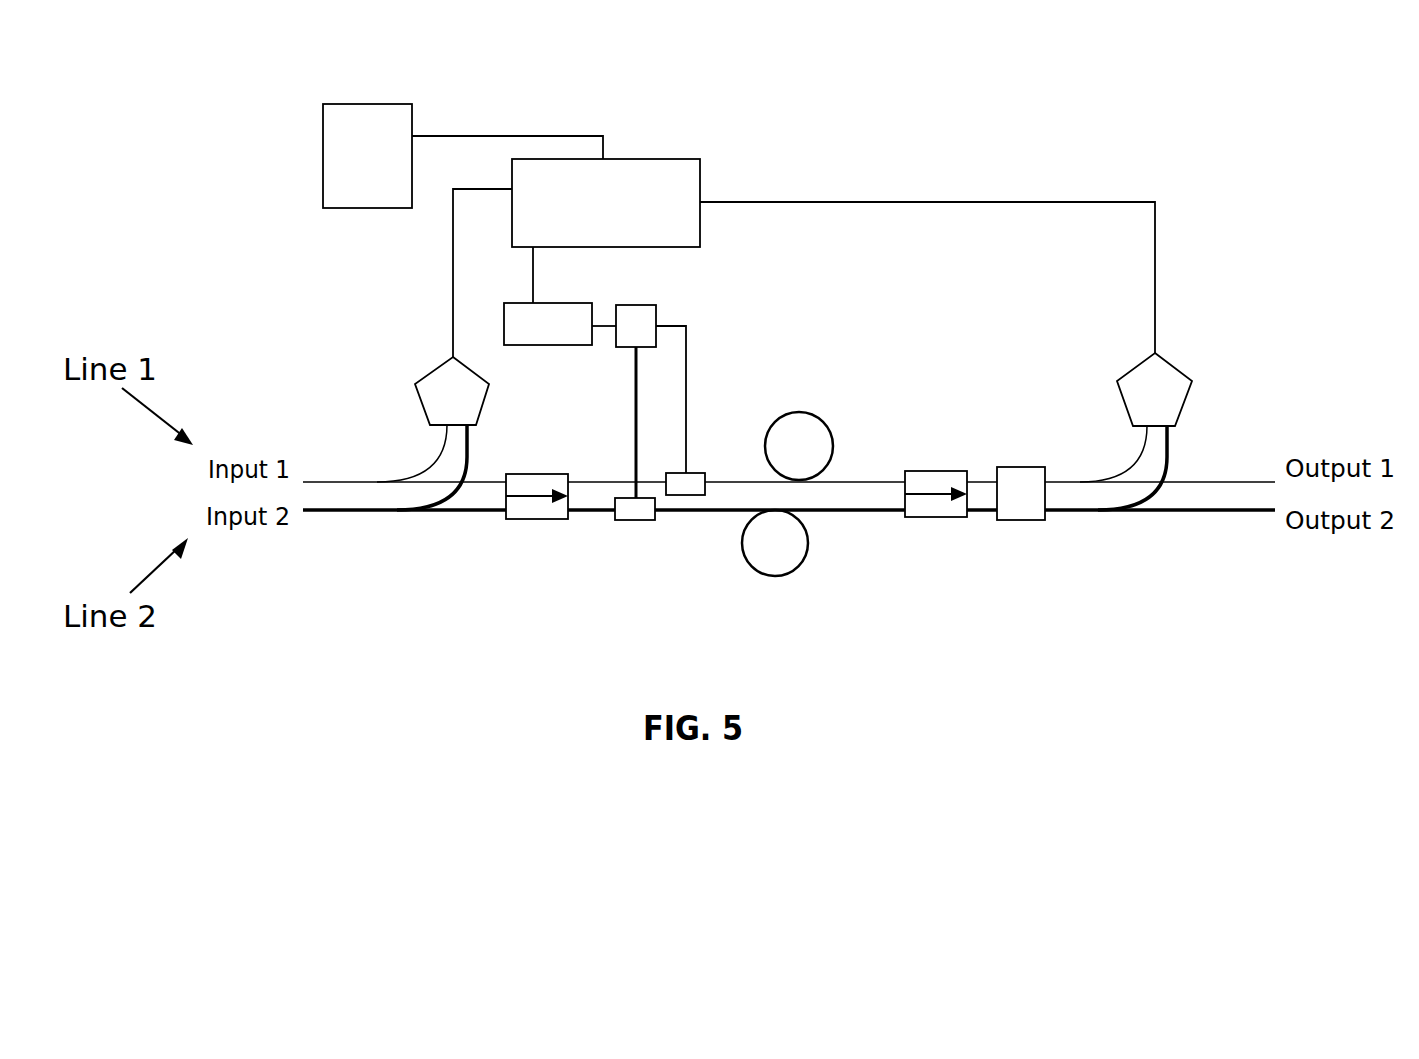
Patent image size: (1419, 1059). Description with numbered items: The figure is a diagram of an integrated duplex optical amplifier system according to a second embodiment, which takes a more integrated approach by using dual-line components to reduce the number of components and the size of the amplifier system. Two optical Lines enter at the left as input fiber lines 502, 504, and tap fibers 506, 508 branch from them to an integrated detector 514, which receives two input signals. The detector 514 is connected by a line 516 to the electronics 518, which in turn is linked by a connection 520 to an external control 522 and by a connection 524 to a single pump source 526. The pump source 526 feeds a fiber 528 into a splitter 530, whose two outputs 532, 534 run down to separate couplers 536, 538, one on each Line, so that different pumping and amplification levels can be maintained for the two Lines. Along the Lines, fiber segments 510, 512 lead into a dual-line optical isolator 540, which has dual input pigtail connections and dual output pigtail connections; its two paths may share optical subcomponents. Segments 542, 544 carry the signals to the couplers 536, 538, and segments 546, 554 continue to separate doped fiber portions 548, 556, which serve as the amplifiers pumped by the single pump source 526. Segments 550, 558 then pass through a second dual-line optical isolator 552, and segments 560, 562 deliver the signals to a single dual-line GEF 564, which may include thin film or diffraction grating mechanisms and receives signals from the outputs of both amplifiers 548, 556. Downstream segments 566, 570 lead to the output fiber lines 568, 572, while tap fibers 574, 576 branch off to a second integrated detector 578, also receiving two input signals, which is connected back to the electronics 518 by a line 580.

The input 1 fiber line 502 is at (337, 480).
The input 2 fiber line 504 is at (337, 514).
The tap fiber from line 1 to detector 506 is at (418, 463).
The tap fiber from line 2 to detector 508 is at (472, 448).
The line 1 segment before isolator 510 is at (478, 478).
The line 2 segment before isolator 512 is at (467, 515).
The integrated detector 514 is at (418, 376).
The detector to electronics connection 516 is at (452, 301).
The electronics 518 is at (653, 158).
The external control to electronics connection 520 is at (553, 133).
The external control 522 is at (314, 183).
The electronics to pump connection 524 is at (536, 286).
The pump source 526 is at (547, 348).
The pump to splitter fiber 528 is at (605, 330).
The splitter 530 is at (631, 303).
The splitter output fiber to upper coupler 532 is at (690, 335).
The splitter output fiber to lower coupler 534 is at (632, 421).
The coupler 536 is at (692, 471).
The coupler 538 is at (647, 522).
The dual-line optical isolator 540 is at (532, 525).
The line 1 segment between isolator and coupler 542 is at (618, 478).
The line 2 segment between isolator and coupler 544 is at (597, 514).
The line 1 segment after coupler 546 is at (760, 478).
The doped fiber portion 548 is at (805, 412).
The line 1 segment after doped fiber 550 is at (838, 478).
The dual-line optical isolator 552 is at (912, 518).
The line 2 segment after coupler 554 is at (723, 514).
The doped fiber portion 556 is at (775, 578).
The line 2 segment after doped fiber 558 is at (827, 514).
The line 1 segment between isolator and GEF 560 is at (975, 475).
The line 2 segment between isolator and GEF 562 is at (977, 513).
The dual-line GEF 564 is at (1015, 522).
The line 1 segment after GEF 566 is at (1067, 477).
The output 1 fiber line 568 is at (1202, 475).
The line 2 segment after GEF 570 is at (1073, 513).
The output 2 fiber line 572 is at (1180, 513).
The tap fiber from line 1 to output detector 574 is at (1130, 449).
The tap fiber from line 2 to output detector 576 is at (1173, 444).
The integrated detector 578 is at (1173, 363).
The output detector to electronics connection 580 is at (956, 201).